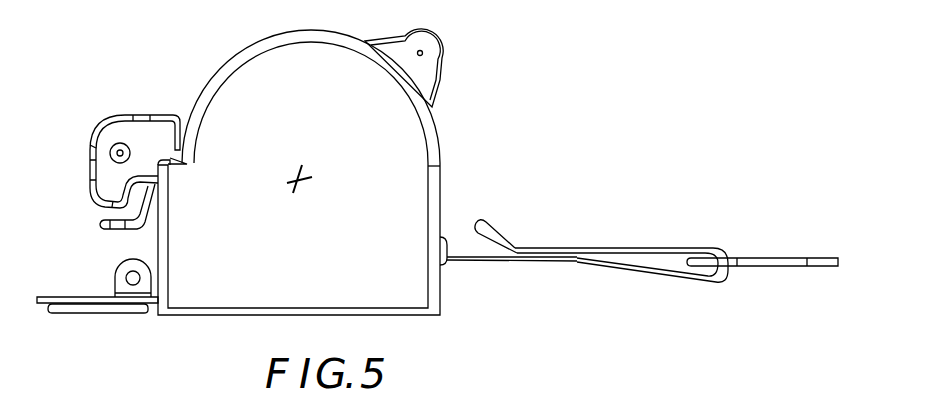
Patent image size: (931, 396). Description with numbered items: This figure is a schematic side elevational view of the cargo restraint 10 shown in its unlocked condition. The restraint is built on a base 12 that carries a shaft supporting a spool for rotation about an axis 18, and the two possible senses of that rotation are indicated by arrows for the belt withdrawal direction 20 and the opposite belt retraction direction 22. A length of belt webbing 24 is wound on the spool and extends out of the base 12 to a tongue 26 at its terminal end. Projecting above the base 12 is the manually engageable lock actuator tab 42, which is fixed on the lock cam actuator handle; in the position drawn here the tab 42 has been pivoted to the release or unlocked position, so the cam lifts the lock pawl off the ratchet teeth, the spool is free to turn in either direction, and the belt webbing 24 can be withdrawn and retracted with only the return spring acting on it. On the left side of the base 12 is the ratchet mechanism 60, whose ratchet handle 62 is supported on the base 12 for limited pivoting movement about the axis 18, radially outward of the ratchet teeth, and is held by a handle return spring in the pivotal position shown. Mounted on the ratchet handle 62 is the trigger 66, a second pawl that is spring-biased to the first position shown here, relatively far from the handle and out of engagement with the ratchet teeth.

The cargo restraint 10 is at (145, 338).
The base 12 is at (427, 318).
The axis 18 is at (283, 205).
The belt withdrawal direction 20 is at (258, 142).
The belt retraction direction 22 is at (350, 142).
The belt webbing 24 is at (633, 272).
The tongue 26 is at (788, 266).
The lock actuator tab 42 is at (438, 70).
The ratchet mechanism 60 is at (146, 106).
The ratchet handle 62 is at (100, 127).
The trigger 66 is at (102, 226).